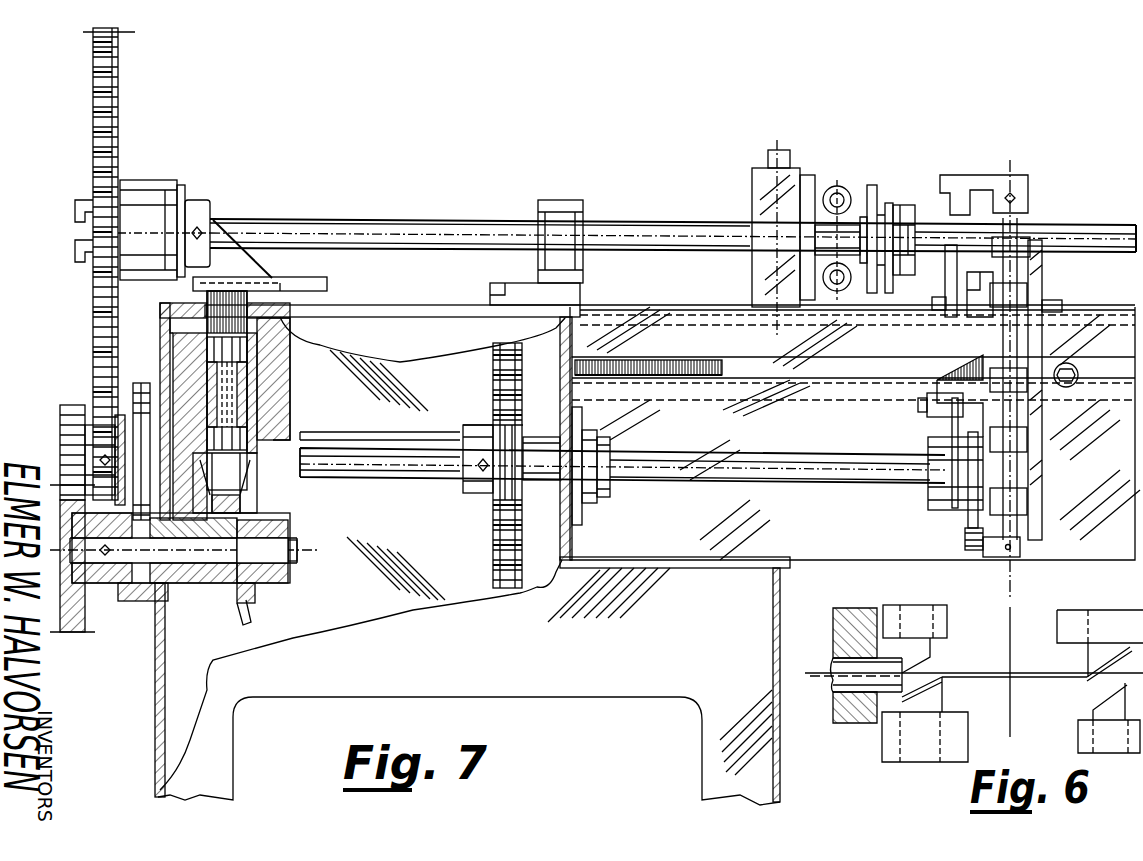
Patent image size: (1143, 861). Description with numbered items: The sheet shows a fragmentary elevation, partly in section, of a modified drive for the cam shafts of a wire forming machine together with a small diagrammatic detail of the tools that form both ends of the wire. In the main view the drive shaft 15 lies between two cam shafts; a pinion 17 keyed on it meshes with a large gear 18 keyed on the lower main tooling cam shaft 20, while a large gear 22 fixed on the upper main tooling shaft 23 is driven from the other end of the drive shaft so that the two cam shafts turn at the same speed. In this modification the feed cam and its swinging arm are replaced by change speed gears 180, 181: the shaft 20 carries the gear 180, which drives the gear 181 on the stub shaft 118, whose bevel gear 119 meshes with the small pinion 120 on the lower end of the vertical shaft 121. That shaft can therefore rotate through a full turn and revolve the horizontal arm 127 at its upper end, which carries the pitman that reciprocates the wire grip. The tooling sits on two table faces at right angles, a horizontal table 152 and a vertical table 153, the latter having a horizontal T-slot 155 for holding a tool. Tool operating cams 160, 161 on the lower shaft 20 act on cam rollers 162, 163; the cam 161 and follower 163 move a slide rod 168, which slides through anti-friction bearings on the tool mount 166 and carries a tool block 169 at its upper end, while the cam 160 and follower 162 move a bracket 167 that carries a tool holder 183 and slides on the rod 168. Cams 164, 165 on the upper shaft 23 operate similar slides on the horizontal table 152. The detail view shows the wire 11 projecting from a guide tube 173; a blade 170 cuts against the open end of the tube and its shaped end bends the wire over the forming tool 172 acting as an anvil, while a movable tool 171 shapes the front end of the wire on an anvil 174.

In FIG. 7, the large gear 22 is at (92, 296).
In FIG. 7, the upper main tooling shaft 23 is at (640, 262).
In FIG. 7, the horizontal arm 127 is at (328, 286).
In FIG. 7, the vertical shaft 121 is at (275, 390).
In FIG. 7, the small pinion 120 is at (207, 492).
In FIG. 7, the change speed gear 180 is at (58, 432).
In FIG. 7, the change speed gear 181 is at (58, 480).
In FIG. 7, the stub shaft 118 is at (298, 545).
In FIG. 7, the bevel gear 119 is at (290, 522).
In FIG. 7, the horizontal table surface 152 is at (660, 303).
In FIG. 7, the vertical table surface 153 is at (850, 554).
In FIG. 7, the horizontal slot 155 is at (735, 375).
In FIG. 7, the drive shaft 15 is at (338, 432).
In FIG. 7, the main tooling cam shaft 20 is at (358, 474).
In FIG. 7, the pinion 17 is at (476, 420).
In FIG. 7, the large gear 18 is at (490, 512).
In FIG. 7, the tool mount 166 is at (796, 170).
In FIG. 7, the slide rod 168 is at (848, 178).
In FIG. 7, the cam 165 is at (874, 186).
In FIG. 7, the cam 164 is at (898, 200).
In FIG. 7, the tool block 169 is at (957, 200).
In FIG. 7, the tool holder 183 is at (945, 278).
In FIG. 7, the bracket 167 is at (980, 350).
In FIG. 7, the tool operating cam 160 is at (940, 428).
In FIG. 7, the cam roller 162 is at (958, 408).
In FIG. 7, the tool operating cam 161 is at (968, 515).
In FIG. 7, the cam roller 163 is at (964, 545).
In FIG. 6, the guide tube 173 is at (842, 660).
In FIG. 6, the wire 11 is at (825, 676).
In FIG. 6, the blade 170 is at (925, 652).
In FIG. 6, the forming tool 172 is at (930, 697).
In FIG. 6, the anvil 174 is at (1088, 658).
In FIG. 6, the movable tool 171 is at (1093, 707).